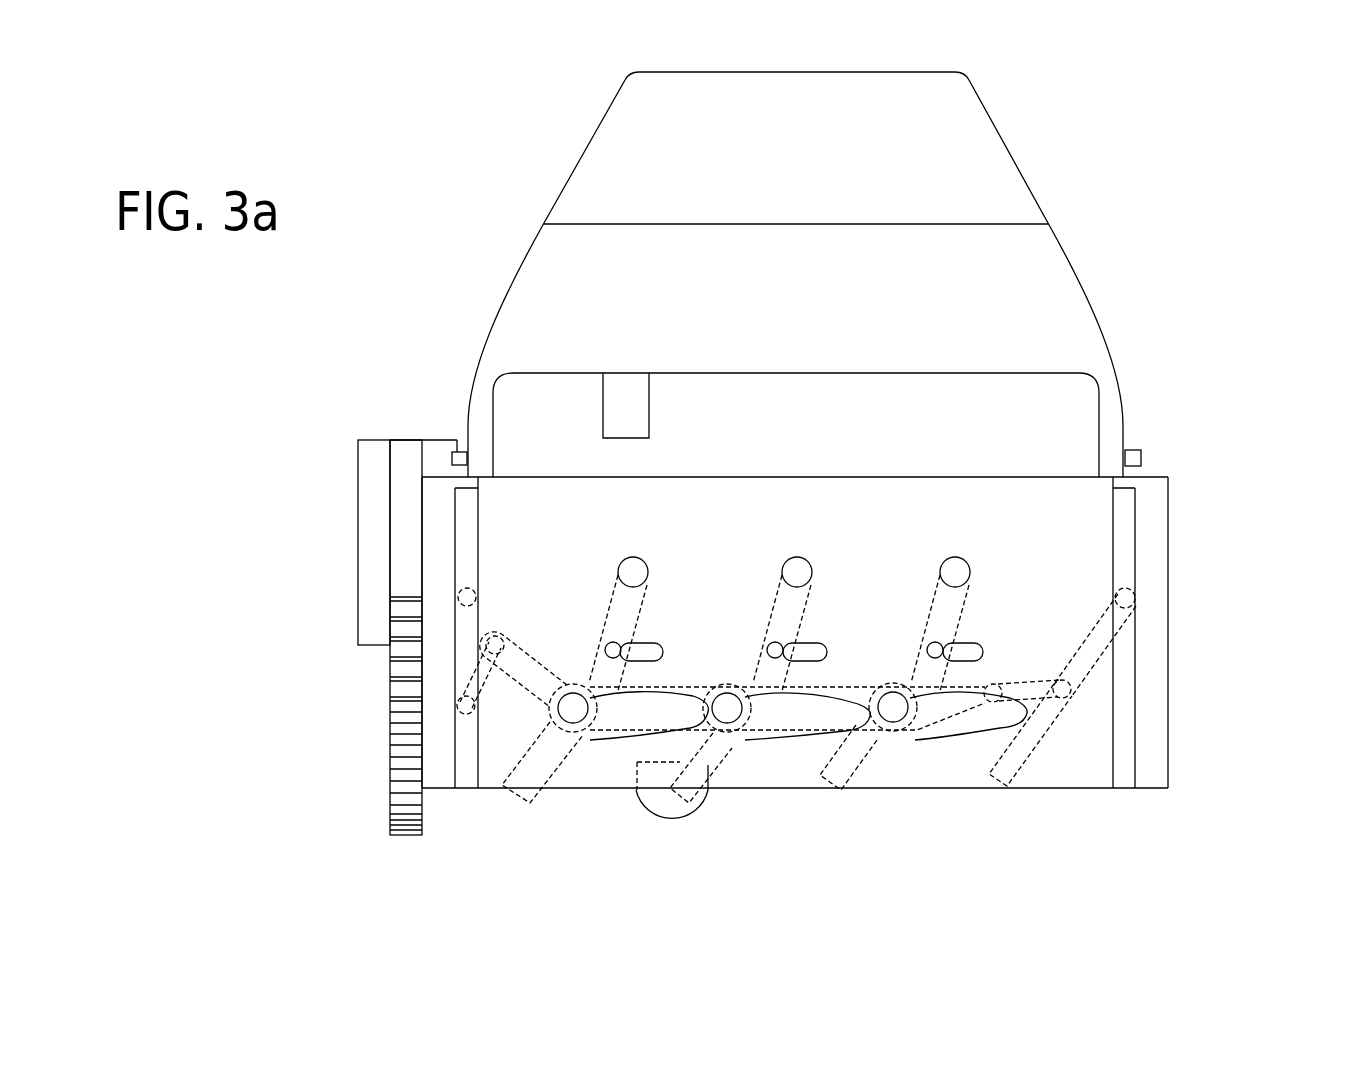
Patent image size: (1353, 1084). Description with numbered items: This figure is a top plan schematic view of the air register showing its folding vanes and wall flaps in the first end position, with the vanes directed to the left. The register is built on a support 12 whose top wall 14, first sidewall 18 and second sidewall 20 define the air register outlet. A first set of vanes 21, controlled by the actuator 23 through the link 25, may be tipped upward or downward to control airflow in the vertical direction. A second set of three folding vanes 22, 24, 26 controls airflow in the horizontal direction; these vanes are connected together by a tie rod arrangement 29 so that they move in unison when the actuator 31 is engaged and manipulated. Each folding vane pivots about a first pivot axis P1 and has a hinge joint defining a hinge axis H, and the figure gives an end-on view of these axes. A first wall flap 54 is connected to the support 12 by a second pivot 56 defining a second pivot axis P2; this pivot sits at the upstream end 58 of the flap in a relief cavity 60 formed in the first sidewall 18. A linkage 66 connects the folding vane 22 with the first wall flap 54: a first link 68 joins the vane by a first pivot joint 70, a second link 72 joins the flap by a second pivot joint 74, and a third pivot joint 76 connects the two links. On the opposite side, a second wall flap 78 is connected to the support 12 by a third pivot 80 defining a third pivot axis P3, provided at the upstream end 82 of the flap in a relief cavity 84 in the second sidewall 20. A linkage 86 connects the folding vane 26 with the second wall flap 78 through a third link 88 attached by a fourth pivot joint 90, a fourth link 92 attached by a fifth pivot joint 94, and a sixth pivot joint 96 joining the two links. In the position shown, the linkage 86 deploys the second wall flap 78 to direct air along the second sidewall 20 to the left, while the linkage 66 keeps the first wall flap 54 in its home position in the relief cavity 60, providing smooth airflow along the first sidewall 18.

The support 12 is at (1168, 557).
The top wall 14 is at (1005, 535).
The first sidewall 18 is at (437, 772).
The second sidewall 20 is at (1168, 772).
The first set of vanes 21 is at (1032, 410).
The folding vane 22 is at (524, 800).
The actuator 23 is at (390, 773).
The folding vane 24 is at (710, 753).
The link 25 is at (360, 498).
The folding vane 26 is at (890, 727).
The tie rod arrangement 29 is at (840, 688).
The actuator 31 is at (666, 838).
The first wall flap 54 is at (468, 753).
The second pivot 56 is at (478, 594).
The upstream end 58 is at (478, 620).
The relief cavity 60 is at (458, 648).
The linkage 66 is at (510, 687).
The first link 68 is at (531, 660).
The first pivot joint 70 is at (580, 733).
The second link 72 is at (458, 703).
The second pivot joint 74 is at (455, 713).
The third pivot joint 76 is at (480, 642).
The second wall flap 78 is at (1000, 776).
The third pivot 80 is at (1133, 593).
The upstream end 82 is at (1136, 612).
The relief cavity 84 is at (1127, 708).
The linkage 86 is at (1042, 668).
The third link 88 is at (958, 715).
The fourth pivot joint 90 is at (912, 733).
The fourth link 92 is at (1023, 688).
The fifth pivot joint 94 is at (1073, 695).
The sixth pivot joint 96 is at (992, 703).
The hinge axis H is at (623, 640).
The first pivot axis P1 is at (630, 558).
The second pivot axis P2 is at (462, 590).
The third pivot axis P3 is at (1135, 605).